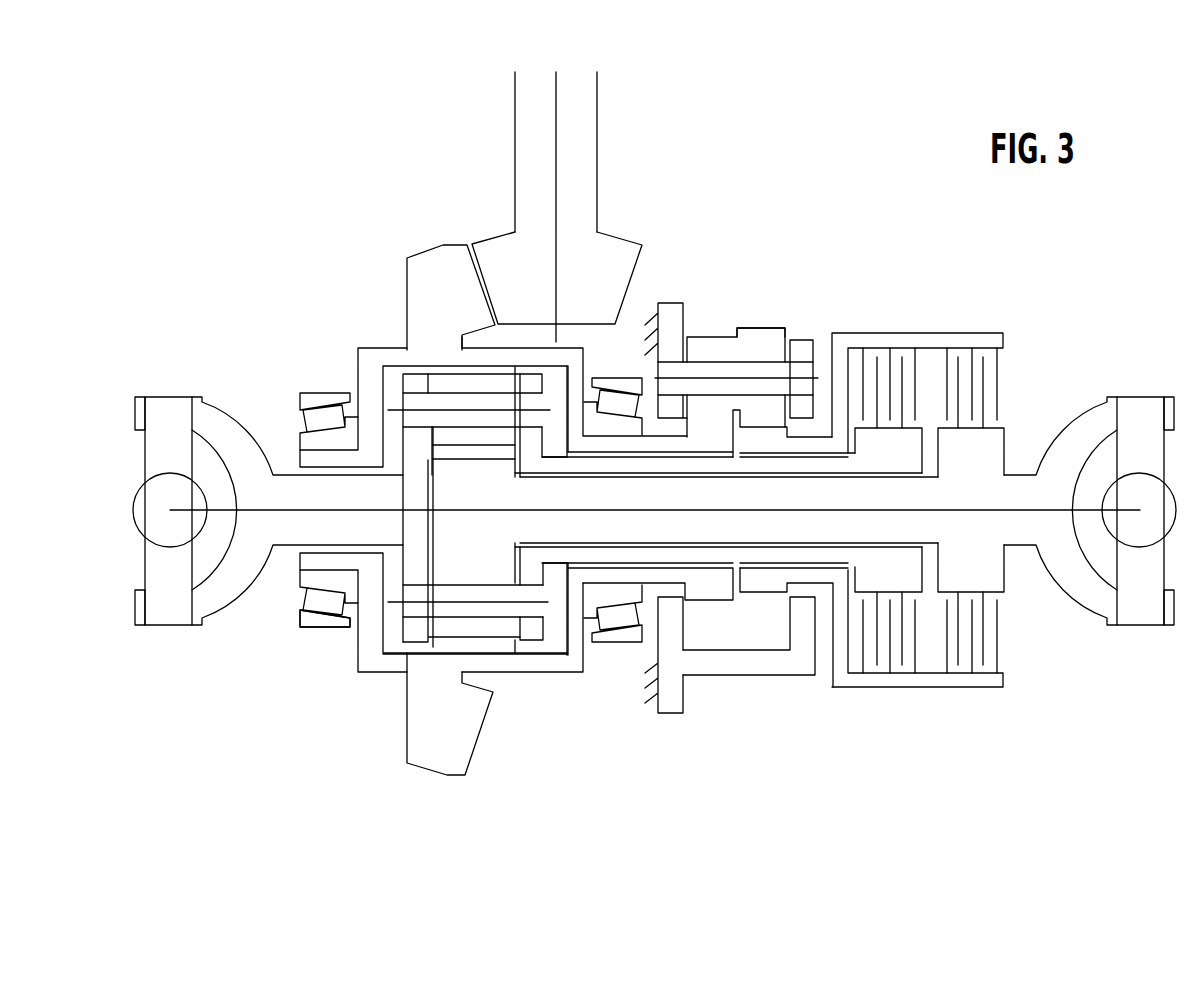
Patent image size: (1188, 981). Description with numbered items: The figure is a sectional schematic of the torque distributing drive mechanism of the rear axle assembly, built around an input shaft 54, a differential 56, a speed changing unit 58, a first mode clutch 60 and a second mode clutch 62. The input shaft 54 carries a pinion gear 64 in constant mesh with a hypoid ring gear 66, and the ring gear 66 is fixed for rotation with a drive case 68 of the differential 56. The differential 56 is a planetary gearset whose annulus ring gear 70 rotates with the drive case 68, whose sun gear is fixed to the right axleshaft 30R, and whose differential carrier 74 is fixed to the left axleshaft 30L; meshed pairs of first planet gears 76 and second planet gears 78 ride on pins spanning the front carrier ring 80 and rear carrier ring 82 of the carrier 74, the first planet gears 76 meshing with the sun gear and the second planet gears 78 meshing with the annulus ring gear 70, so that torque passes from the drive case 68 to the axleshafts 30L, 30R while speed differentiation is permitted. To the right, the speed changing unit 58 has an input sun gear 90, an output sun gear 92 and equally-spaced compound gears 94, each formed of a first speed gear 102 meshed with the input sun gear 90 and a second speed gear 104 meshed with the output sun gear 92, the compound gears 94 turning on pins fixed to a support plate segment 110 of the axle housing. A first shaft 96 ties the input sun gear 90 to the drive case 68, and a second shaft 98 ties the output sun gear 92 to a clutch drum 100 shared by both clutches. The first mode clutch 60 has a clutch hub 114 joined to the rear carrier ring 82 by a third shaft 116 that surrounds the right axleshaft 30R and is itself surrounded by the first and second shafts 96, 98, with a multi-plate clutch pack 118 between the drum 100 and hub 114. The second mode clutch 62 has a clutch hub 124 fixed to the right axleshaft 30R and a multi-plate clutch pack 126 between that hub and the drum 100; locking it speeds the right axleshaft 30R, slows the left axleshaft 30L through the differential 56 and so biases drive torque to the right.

The left axleshaft 30L is at (283, 485).
The right axleshaft 30R is at (1017, 483).
The input shaft 54 is at (585, 150).
The differential 56 is at (426, 644).
The speed changing unit 58 is at (793, 213).
The first mode clutch 60 is at (882, 665).
The second mode clutch 62 is at (987, 675).
The pinion gear 64 is at (617, 263).
The hypoid ring gear 66 is at (439, 260).
The drive case 68 is at (557, 662).
The annulus ring gear 70 is at (493, 658).
The differential carrier 74 is at (414, 387).
The first planet gears 76 is at (460, 627).
The second planet gears 78 is at (475, 440).
The front carrier ring 80 is at (388, 633).
The rear carrier ring 82 is at (530, 388).
The input sun gear 90 is at (710, 590).
The output sun gear 92 is at (763, 585).
The compound gears 94 is at (790, 333).
The first shaft 96 is at (620, 578).
The second shaft 98 is at (805, 572).
The clutch drum 100 is at (918, 342).
The first speed gear 102 is at (712, 343).
The second speed gear 104 is at (773, 337).
The support plate segment 110 is at (676, 317).
The clutch hub 114 is at (890, 460).
The third shaft 116 is at (620, 463).
The multi-plate clutch pack 118 is at (888, 377).
The clutch hub 124 is at (990, 570).
The multi-plate clutch pack 126 is at (993, 370).